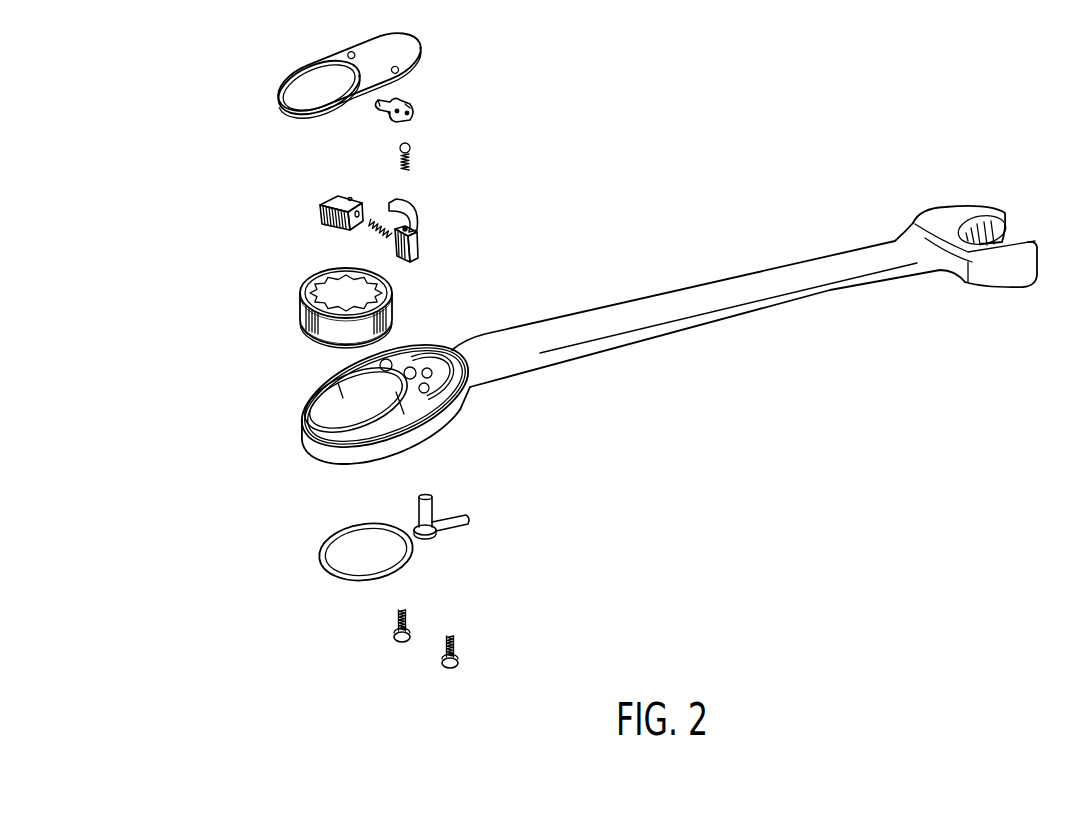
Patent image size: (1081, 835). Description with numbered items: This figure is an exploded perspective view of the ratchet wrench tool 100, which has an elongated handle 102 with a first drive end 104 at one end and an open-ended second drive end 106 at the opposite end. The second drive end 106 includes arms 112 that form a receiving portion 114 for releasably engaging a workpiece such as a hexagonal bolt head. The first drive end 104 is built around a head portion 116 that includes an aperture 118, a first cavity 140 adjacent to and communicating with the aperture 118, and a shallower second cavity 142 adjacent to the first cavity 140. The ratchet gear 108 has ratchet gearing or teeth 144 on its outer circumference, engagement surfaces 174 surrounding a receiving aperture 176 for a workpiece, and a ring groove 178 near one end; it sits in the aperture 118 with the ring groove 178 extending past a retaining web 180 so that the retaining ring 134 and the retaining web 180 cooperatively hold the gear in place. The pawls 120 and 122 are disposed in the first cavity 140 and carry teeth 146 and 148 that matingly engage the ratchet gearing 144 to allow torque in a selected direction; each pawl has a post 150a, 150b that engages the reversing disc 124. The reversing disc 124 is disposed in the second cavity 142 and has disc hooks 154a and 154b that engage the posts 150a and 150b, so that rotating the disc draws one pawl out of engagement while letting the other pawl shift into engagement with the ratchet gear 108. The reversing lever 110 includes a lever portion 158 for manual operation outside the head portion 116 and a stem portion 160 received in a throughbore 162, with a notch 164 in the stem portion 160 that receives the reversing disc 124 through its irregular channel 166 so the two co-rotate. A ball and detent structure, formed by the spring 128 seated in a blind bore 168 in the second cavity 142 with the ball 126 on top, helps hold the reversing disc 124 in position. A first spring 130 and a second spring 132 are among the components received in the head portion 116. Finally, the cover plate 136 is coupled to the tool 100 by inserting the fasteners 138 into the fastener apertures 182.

The tool 100 is at (709, 118).
The handle 102 is at (680, 330).
The first drive end 104 is at (247, 33).
The second drive end 106 is at (917, 212).
The ratchet gear 108 is at (325, 290).
The reversing lever 110 is at (428, 535).
The arms 112 is at (973, 212).
The receiving portion 114 is at (978, 242).
The head portion 116 is at (332, 450).
The aperture 118 is at (345, 417).
The pawl 120 is at (322, 205).
The pawl 122 is at (417, 247).
The reversing disc 124 is at (418, 108).
The ball 126 is at (412, 145).
The spring 128 is at (410, 156).
The first spring 130 is at (373, 230).
The second spring 132 is at (413, 205).
The retaining ring 134 is at (330, 542).
The cover plate 136 is at (420, 46).
The fasteners 138 is at (403, 647).
The first cavity 140 is at (397, 402).
The second cavity 142 is at (413, 362).
The ratchet gearing or teeth 144 is at (322, 325).
The teeth 146 is at (318, 208).
The teeth 148 is at (393, 245).
The post 150a is at (350, 197).
The post 150b is at (405, 232).
The disc hook 154a is at (375, 105).
The disc hook 154b is at (382, 123).
The lever portion 158 is at (465, 523).
The stem portion 160 is at (428, 515).
The throughbore 162 is at (415, 375).
The notch 164 is at (425, 497).
The irregular channel 166 is at (410, 103).
The blind bore 168 is at (430, 377).
The engagement surfaces 174 is at (330, 288).
The receiving aperture 176 is at (378, 288).
The ring groove 178 is at (328, 345).
The retaining web 180 is at (310, 423).
The fastener apertures 182 is at (393, 363).